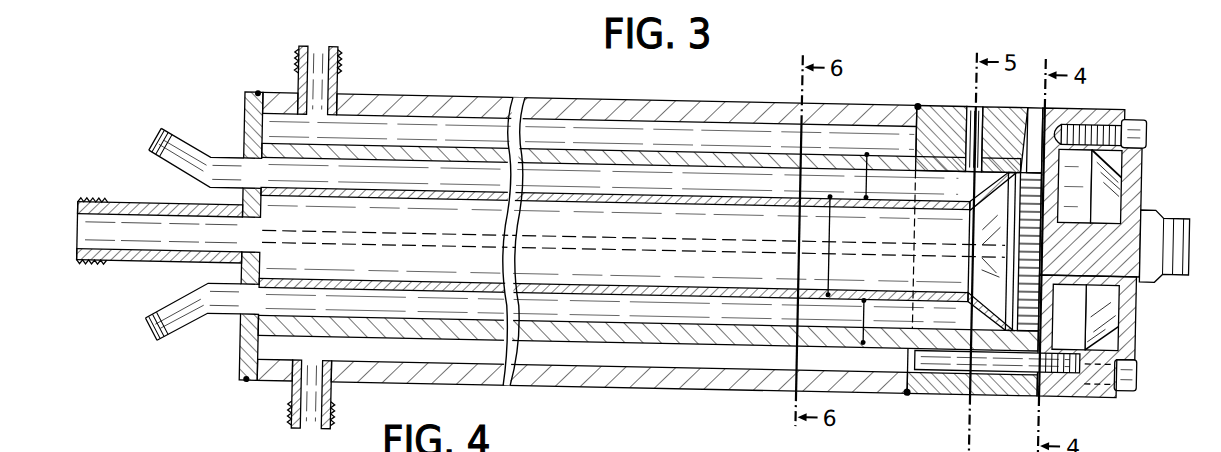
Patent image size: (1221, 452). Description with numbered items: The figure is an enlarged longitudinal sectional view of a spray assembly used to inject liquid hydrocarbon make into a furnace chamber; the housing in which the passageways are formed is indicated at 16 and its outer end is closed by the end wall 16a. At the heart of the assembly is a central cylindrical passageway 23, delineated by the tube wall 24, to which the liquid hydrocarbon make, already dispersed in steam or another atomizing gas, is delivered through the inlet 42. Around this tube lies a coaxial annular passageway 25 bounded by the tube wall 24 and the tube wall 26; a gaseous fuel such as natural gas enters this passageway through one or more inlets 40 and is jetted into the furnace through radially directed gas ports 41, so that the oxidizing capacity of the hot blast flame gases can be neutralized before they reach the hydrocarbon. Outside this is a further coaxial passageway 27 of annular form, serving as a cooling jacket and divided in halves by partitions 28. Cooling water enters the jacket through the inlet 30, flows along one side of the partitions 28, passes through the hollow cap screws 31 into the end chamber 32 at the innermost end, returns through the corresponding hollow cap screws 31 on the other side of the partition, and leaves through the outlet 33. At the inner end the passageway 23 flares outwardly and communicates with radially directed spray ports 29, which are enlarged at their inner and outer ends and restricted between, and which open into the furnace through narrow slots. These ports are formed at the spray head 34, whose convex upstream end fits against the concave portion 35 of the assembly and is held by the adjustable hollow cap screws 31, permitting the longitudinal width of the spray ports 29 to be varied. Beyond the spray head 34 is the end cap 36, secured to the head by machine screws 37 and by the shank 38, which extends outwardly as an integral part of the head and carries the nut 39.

The outer housing shell 16 is at (665, 371).
The end wall 16a is at (250, 121).
The central cylindrical passageway 23 is at (558, 266).
The tube wall 24 is at (617, 288).
The annular passageway 25 is at (650, 306).
The tube wall 26 is at (570, 144).
The coaxial passageway 27 is at (640, 121).
The partitions 28 is at (712, 232).
The spray ports 29 is at (1050, 98).
The inlet 30 is at (338, 412).
The hollow cap screws 31 is at (1063, 324).
The end chamber 32 is at (1113, 294).
The outlet 33 is at (344, 84).
The spray head 34 is at (1057, 375).
The concave portion 35 is at (1030, 93).
The end cap 36 is at (1110, 381).
The machine screws 37 is at (1135, 101).
The shank 38 is at (1112, 215).
The nut 39 is at (1160, 206).
The inlets 40 is at (157, 322).
The gas ports 41 is at (973, 95).
The inlet 42 is at (136, 205).